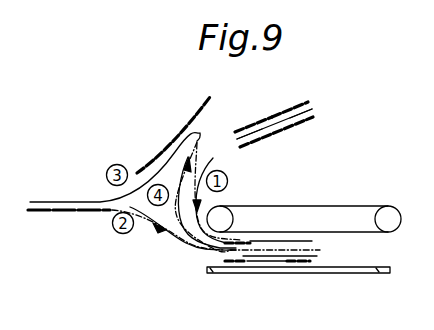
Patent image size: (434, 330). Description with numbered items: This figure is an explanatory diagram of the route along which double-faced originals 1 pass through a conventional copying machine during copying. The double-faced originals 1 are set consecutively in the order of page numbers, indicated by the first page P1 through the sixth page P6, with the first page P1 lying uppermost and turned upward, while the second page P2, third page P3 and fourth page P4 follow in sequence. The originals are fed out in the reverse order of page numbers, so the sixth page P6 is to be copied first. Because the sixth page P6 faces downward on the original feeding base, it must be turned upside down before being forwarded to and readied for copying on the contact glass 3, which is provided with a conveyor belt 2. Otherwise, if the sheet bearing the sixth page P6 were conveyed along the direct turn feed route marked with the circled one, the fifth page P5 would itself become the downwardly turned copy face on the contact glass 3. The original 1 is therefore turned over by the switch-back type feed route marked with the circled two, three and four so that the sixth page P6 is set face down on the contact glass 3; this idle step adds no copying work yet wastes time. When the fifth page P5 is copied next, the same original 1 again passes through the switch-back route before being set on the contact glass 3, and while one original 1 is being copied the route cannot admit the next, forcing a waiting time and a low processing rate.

The double-faced original 1 is at (66, 212).
The conveyor belt 2 is at (358, 206).
The contact glass 3 is at (330, 274).
The first page P1 is at (296, 104).
The second page P2 is at (258, 124).
The third page P3 is at (316, 107).
The fourth page P4 is at (254, 138).
The fifth page P5 is at (38, 212).
The sixth page P6 is at (96, 204).